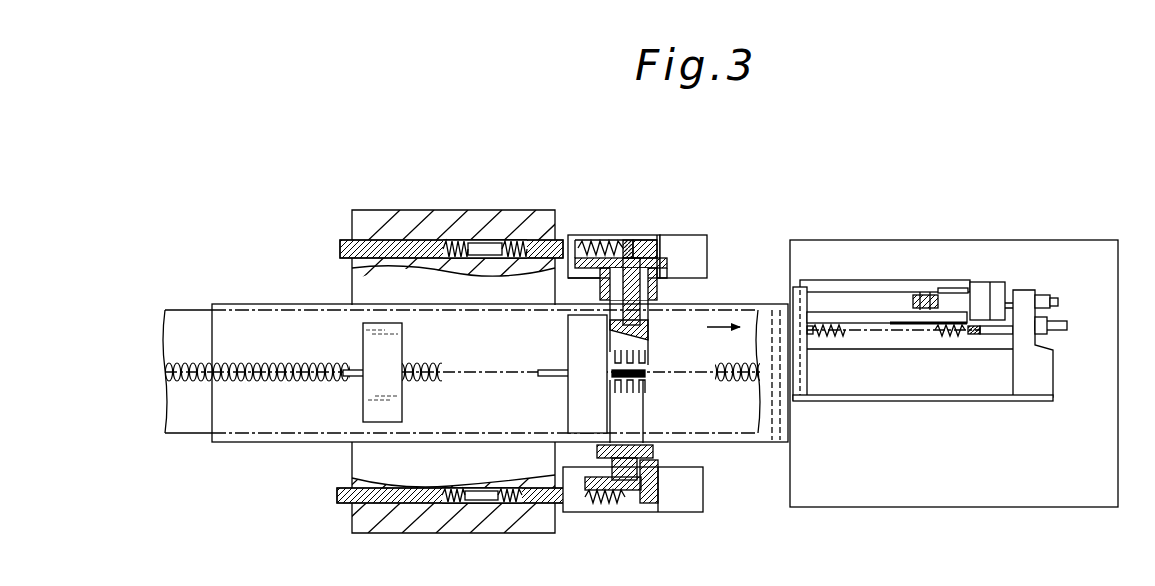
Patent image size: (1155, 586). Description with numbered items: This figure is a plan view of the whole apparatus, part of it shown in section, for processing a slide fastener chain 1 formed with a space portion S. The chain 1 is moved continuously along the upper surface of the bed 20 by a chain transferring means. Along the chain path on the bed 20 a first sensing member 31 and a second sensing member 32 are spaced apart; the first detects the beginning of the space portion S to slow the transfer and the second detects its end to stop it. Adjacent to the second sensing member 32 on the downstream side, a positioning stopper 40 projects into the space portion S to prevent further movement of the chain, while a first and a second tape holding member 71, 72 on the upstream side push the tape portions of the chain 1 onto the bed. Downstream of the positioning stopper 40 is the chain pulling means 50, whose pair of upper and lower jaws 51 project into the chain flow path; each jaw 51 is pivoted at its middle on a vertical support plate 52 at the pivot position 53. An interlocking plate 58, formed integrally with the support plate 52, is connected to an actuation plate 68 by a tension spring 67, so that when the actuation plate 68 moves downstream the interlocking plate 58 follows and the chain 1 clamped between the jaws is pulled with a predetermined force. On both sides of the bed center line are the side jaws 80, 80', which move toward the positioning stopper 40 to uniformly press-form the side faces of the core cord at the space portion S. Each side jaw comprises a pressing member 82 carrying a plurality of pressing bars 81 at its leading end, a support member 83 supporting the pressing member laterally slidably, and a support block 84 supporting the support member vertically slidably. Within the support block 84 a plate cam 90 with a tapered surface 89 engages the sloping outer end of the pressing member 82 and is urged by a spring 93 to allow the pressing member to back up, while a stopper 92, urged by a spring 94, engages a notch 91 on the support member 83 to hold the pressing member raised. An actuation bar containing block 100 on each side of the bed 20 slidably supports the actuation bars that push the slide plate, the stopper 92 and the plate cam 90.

The slide fastener chain 1 is at (189, 318).
The bed 20 is at (268, 304).
The actuation bar containing block 100 is at (452, 212).
The first sensing member 31 is at (352, 370).
The first tape holding member 71 is at (365, 406).
The space portion S is at (467, 366).
The second sensing member 32 is at (547, 368).
The second tape holding member 72 is at (573, 407).
The support block 84 is at (648, 243).
The plate cam 90 is at (693, 240).
The support member 83 is at (665, 268).
The spring 93 is at (588, 240).
The tapered surface 89 is at (627, 245).
The side jaw 80 is at (670, 368).
The pressing member 82 is at (632, 345).
The side jaw 80' is at (701, 299).
The pressing bars 81 is at (646, 355).
The positioning stopper 40 is at (652, 375).
The notch 91 is at (655, 452).
The stopper 92 is at (659, 488).
The spring 94 is at (593, 503).
The chain pulling means 50 is at (913, 275).
The interlocking plate 58 is at (872, 280).
The jaw 51 is at (820, 304).
The support plate 52 is at (975, 285).
The pivot position 53 is at (930, 292).
The tension spring 67 is at (929, 335).
The actuation plate 68 is at (978, 401).